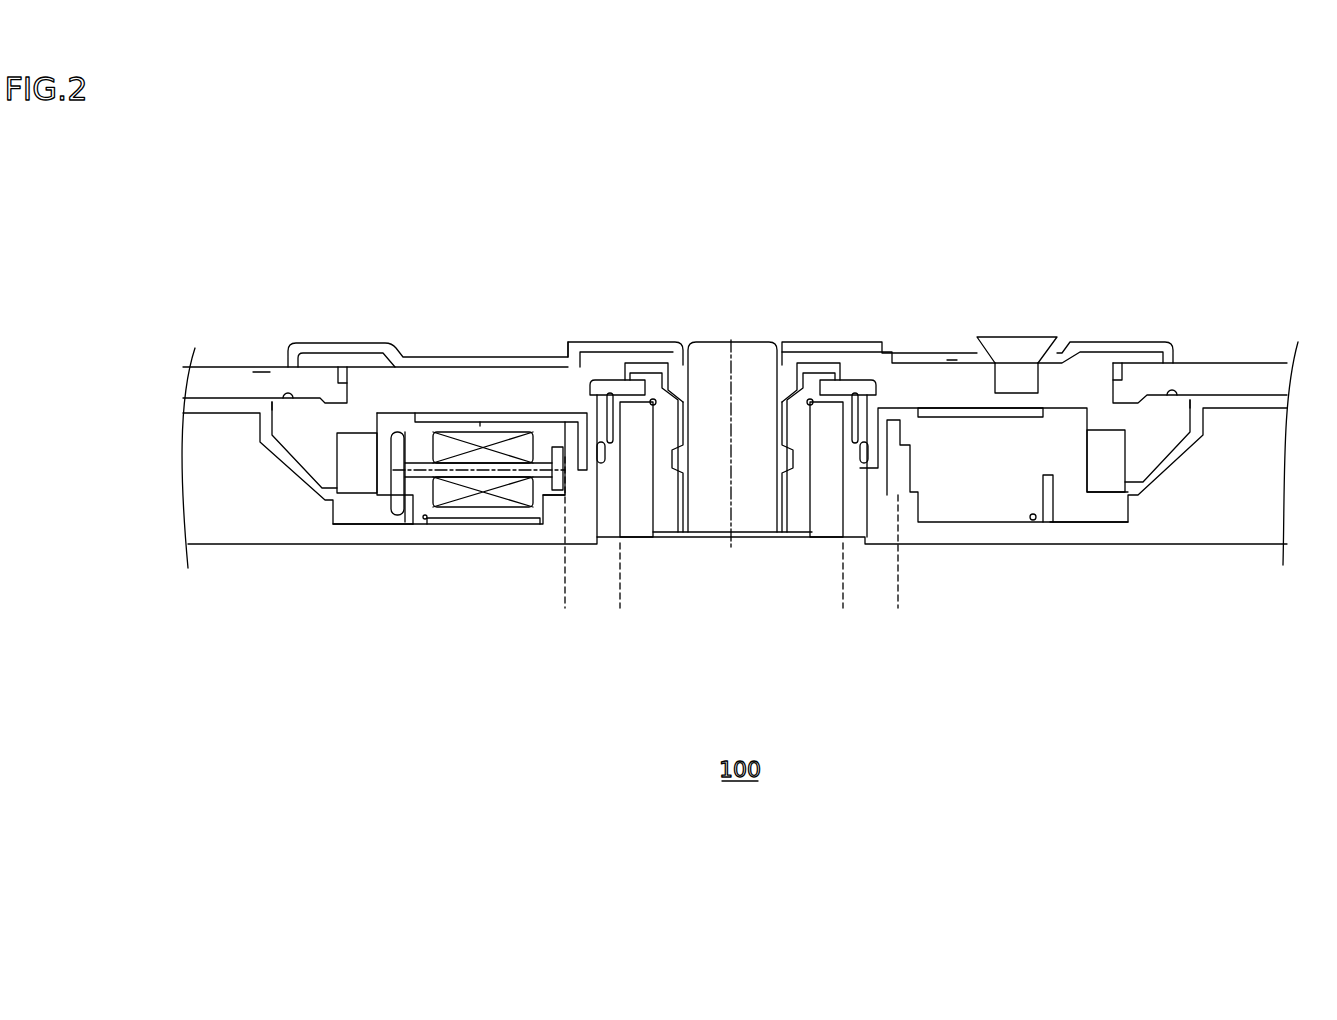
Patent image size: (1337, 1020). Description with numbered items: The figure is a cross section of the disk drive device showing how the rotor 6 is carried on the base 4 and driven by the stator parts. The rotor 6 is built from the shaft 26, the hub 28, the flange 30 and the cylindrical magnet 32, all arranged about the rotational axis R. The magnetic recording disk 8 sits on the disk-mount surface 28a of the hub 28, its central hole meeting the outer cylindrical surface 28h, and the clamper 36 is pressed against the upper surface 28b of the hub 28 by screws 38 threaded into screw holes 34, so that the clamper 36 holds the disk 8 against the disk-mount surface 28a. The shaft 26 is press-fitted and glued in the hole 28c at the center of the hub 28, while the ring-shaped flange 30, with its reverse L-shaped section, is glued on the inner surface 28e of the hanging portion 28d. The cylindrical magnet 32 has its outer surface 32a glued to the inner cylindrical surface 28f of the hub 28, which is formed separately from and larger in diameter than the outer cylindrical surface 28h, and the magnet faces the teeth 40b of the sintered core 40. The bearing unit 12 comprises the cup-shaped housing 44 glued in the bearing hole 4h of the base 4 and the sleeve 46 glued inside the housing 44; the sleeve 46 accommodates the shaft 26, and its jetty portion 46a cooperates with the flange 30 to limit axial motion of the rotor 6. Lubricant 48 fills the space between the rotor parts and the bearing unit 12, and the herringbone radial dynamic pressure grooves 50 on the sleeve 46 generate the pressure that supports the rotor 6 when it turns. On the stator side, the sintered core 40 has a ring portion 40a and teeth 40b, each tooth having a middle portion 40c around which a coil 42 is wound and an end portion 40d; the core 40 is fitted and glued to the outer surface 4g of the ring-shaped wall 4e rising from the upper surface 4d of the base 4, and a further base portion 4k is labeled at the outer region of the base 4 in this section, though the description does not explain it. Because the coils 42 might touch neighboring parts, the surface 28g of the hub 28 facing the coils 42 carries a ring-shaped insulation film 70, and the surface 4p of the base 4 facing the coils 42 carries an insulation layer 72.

The base 4 is at (205, 527).
The upper surface 4d is at (418, 520).
The ring-shaped wall 4e is at (620, 608).
The outer surface 4g is at (556, 410).
The bearing hole 4h is at (625, 540).
The housing wall 4k is at (205, 548).
The surface 4p is at (467, 515).
The rotor 6 is at (492, 205).
The magnetic recording disk 8 is at (220, 385).
The bearing unit 12 is at (713, 645).
The shaft 26 is at (700, 340).
The hub 28 is at (660, 340).
The disk-mount surface 28a is at (284, 418).
The upper surface 28b is at (363, 447).
The hole 28c is at (768, 345).
The hanging portion 28d is at (600, 445).
The inner surface 28e is at (598, 468).
The inner cylindrical surface 28f is at (345, 500).
The surface 28g is at (482, 425).
The outer cylindrical surface 28h is at (342, 382).
The flange 30 is at (605, 345).
The cylindrical magnet 32 is at (367, 447).
The outer surface 32a is at (338, 447).
The screw hole 34 is at (1008, 385).
The clamper 36 is at (252, 372).
The screw 38 is at (1037, 350).
The sintered core 40 is at (395, 518).
The ring portion 40a is at (557, 448).
The teeth 40b is at (400, 310).
The middle portion 40c is at (465, 468).
The end portion 40d is at (448, 452).
The coil 42 is at (443, 505).
The housing 44 is at (642, 515).
The sleeve 46 is at (672, 508).
The jetty portion 46a is at (690, 366).
The lubricant 48 is at (593, 452).
The radial dynamic pressure grooves 50 is at (690, 490).
The insulation film 70 is at (423, 415).
The insulation layer 72 is at (475, 520).
The rotational axis R is at (731, 340).